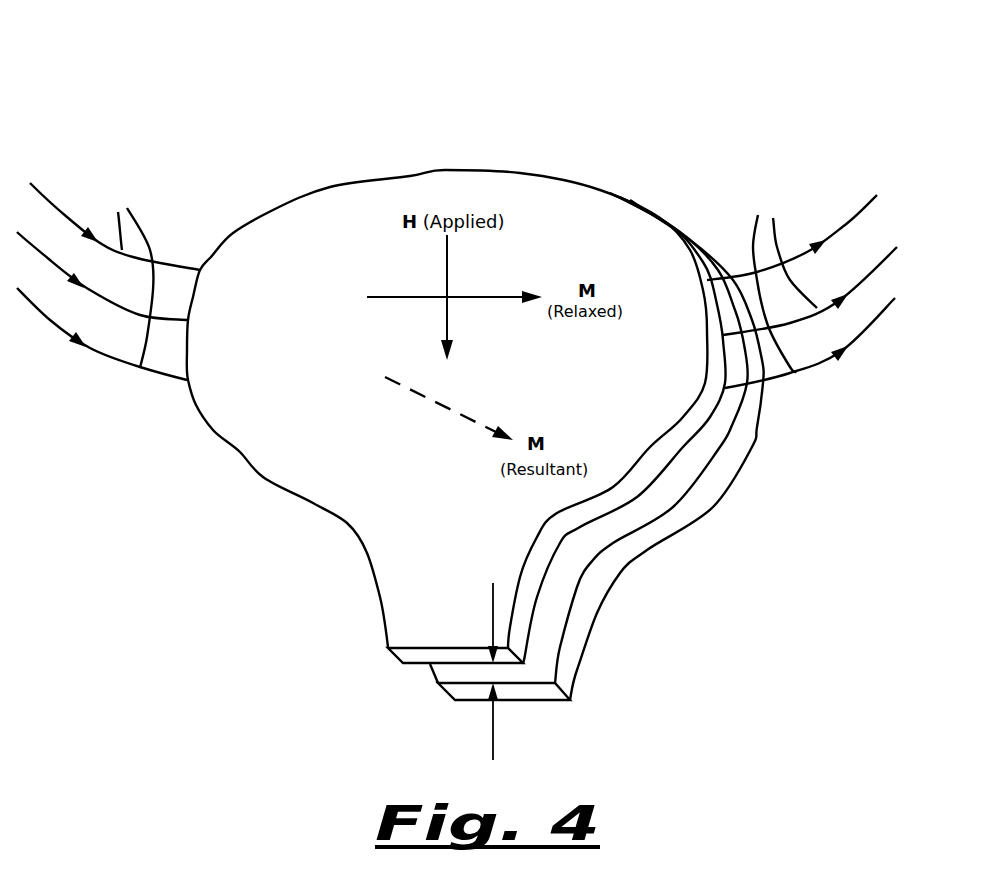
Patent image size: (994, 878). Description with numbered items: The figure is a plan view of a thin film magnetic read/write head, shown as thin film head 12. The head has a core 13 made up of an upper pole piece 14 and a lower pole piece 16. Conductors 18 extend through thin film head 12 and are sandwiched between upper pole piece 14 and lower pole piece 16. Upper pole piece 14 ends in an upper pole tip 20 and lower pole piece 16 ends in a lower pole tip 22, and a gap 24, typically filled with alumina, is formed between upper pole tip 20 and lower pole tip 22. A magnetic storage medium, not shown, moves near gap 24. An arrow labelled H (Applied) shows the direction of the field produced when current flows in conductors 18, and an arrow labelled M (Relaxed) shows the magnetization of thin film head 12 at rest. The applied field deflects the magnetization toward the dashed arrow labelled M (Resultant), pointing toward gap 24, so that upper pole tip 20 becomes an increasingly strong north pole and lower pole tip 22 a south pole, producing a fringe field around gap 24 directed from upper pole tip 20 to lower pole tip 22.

The thin film head 12 is at (160, 92).
The core 13 is at (403, 159).
The upper pole piece 14 is at (578, 227).
The lower pole piece 16 is at (665, 523).
The conductors 18 is at (70, 221).
The upper pole tip 20 is at (410, 654).
The lower pole tip 22 is at (455, 700).
The gap 24 is at (495, 673).